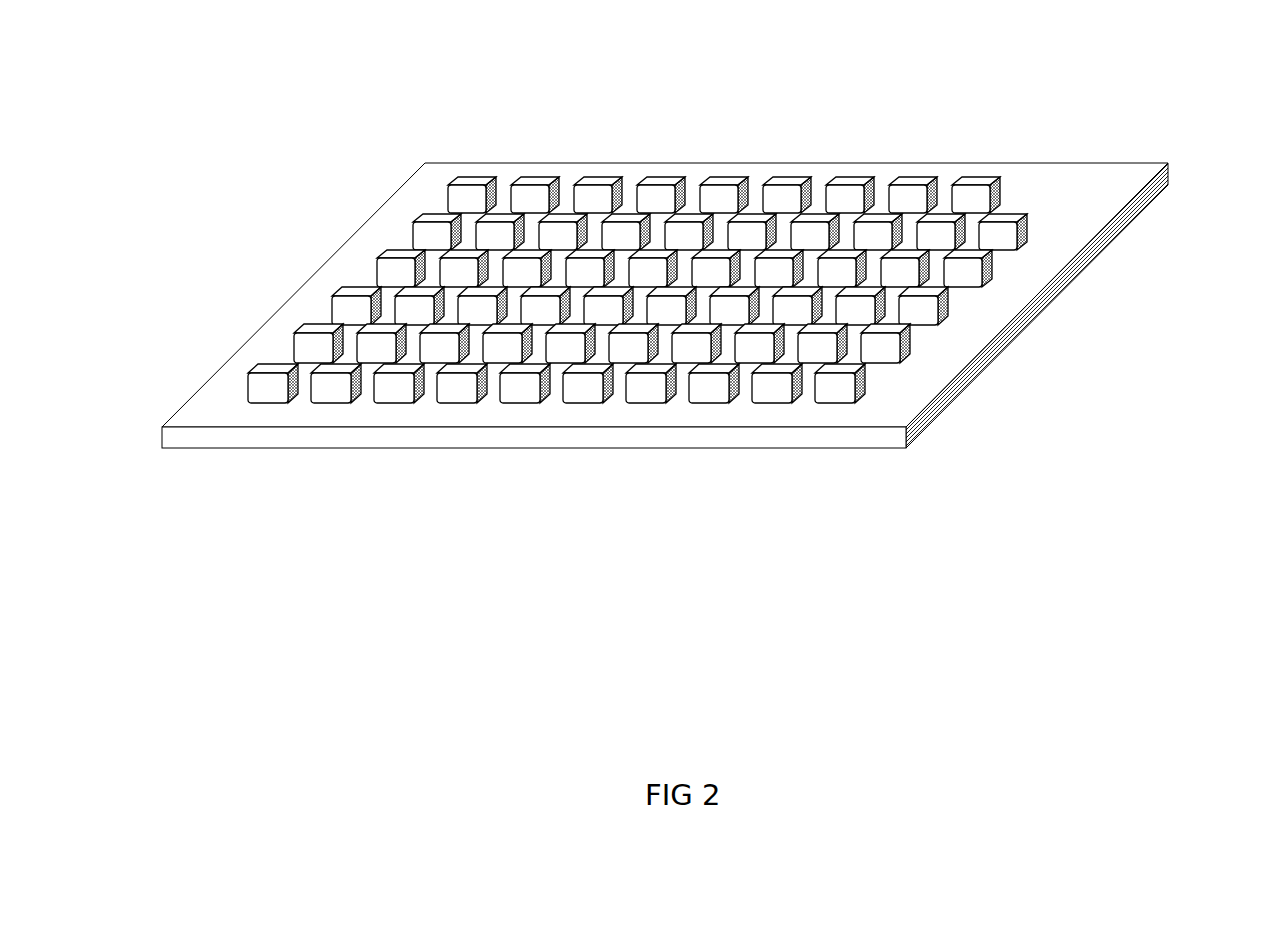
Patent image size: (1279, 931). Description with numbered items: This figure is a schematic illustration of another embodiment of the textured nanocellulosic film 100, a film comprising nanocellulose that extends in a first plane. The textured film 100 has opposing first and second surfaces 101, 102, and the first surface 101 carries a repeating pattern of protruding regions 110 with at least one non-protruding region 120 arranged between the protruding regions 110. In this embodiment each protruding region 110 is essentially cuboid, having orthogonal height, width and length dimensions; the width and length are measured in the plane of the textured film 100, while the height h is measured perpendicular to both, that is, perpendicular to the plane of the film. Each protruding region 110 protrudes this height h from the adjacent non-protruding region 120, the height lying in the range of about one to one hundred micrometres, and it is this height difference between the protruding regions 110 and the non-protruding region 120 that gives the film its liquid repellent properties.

The textured film 100 is at (1106, 112).
The first surface 101 is at (218, 378).
The second surface 102 is at (228, 453).
The protruding regions 110 is at (785, 190).
The non-protruding region 120 is at (880, 372).